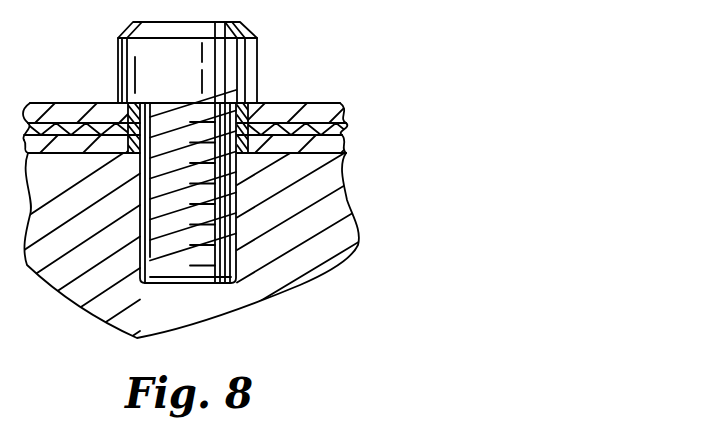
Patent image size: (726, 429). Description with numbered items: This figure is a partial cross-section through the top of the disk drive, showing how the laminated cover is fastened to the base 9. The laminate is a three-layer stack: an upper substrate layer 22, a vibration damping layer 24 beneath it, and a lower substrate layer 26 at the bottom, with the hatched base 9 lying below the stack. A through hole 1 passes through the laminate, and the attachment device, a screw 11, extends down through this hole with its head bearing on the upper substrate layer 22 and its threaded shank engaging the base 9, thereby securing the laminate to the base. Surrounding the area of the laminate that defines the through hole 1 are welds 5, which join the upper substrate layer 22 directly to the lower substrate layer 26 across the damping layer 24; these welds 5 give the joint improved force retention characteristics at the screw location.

The through hole 1 is at (148, 257).
The welds 5 is at (194, 187).
The base 9 is at (333, 210).
The attachment device (screw) 11 is at (250, 32).
The upper substrate layer 22 is at (285, 110).
The vibration damping layer 24 is at (345, 127).
The lower substrate layer 26 is at (332, 143).